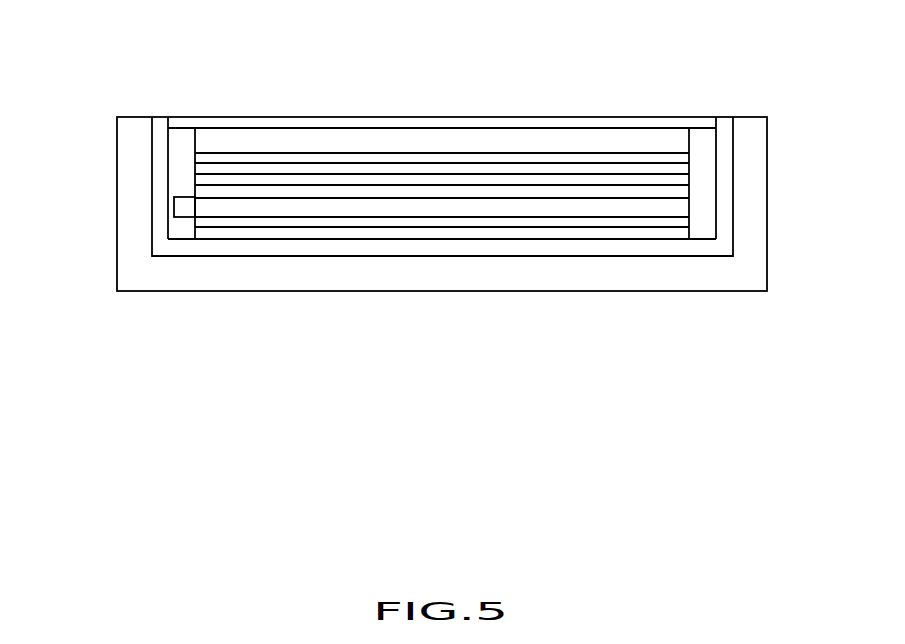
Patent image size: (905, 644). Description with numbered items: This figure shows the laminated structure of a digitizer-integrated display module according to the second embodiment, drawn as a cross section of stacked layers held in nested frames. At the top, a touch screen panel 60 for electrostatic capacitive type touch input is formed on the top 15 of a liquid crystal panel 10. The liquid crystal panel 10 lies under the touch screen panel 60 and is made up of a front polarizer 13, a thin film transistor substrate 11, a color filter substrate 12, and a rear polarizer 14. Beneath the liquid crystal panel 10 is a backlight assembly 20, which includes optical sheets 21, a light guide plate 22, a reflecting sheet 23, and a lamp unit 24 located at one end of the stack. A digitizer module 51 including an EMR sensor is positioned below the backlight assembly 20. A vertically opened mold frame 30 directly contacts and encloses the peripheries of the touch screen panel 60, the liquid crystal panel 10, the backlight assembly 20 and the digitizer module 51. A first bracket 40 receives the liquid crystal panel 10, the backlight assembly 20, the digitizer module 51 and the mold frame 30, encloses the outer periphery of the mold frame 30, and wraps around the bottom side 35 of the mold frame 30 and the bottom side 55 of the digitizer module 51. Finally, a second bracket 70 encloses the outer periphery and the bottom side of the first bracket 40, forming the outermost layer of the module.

The liquid crystal panel 10 is at (828, 95).
The thin film transistor substrate 11 is at (684, 180).
The color filter substrate 12 is at (680, 158).
The front polarizer 13 is at (668, 139).
The rear polarizer 14 is at (684, 192).
The top of liquid crystal panel 15 is at (598, 128).
The backlight assembly 20 is at (57, 159).
The optical sheets 21 is at (200, 191).
The light guide plate 22 is at (200, 204).
The reflecting sheet 23 is at (203, 221).
The lamp unit 24 is at (182, 208).
The mold frame 30 is at (702, 218).
The bottom side of mold frame 35 is at (700, 238).
The first bracket 40 is at (515, 251).
The digitizer module 51 is at (683, 233).
The bottom side of digitizer module 55 is at (591, 239).
The touch screen panel 60 is at (527, 123).
The second bracket 70 is at (379, 281).